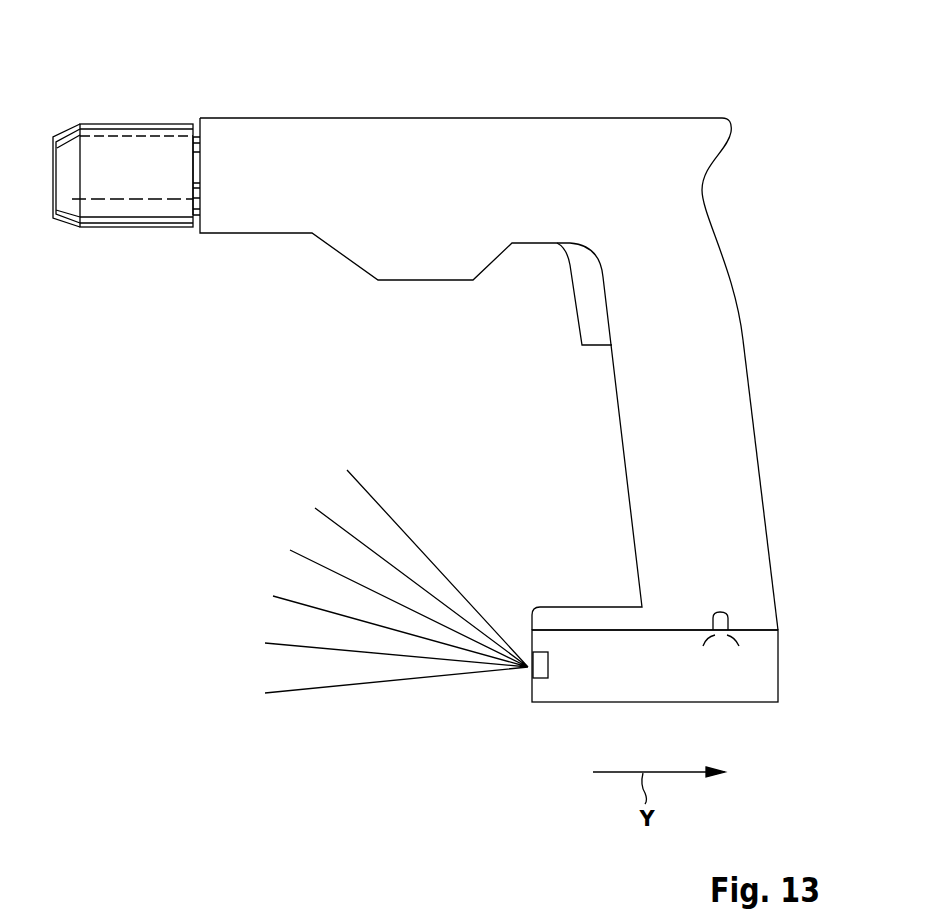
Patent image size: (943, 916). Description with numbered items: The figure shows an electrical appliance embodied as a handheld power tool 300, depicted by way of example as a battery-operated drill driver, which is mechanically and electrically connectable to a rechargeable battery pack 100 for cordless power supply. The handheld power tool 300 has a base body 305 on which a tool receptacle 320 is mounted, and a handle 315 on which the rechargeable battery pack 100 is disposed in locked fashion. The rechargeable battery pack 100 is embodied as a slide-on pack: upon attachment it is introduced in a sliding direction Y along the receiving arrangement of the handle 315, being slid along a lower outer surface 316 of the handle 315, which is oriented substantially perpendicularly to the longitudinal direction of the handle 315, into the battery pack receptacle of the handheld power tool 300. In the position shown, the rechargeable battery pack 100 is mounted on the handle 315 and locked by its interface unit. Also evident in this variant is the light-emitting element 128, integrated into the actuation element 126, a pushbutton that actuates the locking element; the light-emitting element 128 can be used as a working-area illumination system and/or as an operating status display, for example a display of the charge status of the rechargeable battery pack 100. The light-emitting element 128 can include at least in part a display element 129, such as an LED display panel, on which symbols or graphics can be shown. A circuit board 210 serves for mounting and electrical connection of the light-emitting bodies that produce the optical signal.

The handheld power tool 300 is at (676, 96).
The base body 305 is at (393, 138).
The tool receptacle 320 is at (132, 147).
The handle 315 is at (720, 331).
The lower outer surface 316 is at (574, 640).
The circuit board 210 is at (729, 622).
The rechargeable battery pack 100 is at (672, 690).
The actuation element 126 is at (543, 673).
The light-emitting element 128 is at (406, 581).
The display element 129 is at (406, 581).